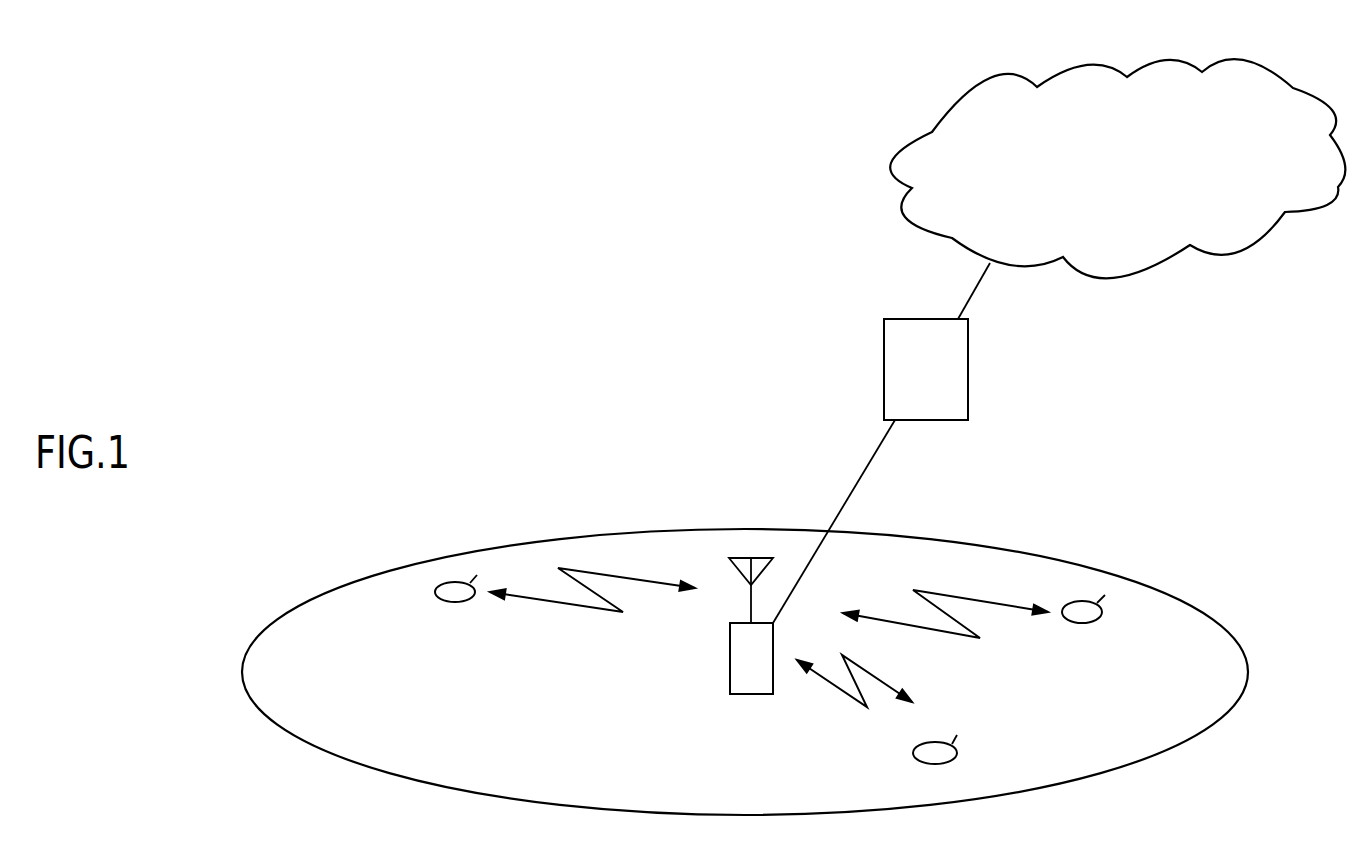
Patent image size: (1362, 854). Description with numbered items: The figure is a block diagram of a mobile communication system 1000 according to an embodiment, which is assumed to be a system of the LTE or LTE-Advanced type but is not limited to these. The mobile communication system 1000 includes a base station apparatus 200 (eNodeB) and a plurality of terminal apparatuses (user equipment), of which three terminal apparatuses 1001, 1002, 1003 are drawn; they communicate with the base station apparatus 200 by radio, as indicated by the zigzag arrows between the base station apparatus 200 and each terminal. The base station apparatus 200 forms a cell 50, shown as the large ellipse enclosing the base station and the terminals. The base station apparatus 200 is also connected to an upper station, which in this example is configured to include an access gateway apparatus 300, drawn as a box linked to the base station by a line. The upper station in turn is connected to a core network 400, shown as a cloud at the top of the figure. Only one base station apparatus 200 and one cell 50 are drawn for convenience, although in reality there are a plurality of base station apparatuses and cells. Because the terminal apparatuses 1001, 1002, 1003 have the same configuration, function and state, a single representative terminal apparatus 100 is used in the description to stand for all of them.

The mobile communication system 1000 is at (438, 104).
The cell 50 is at (1037, 790).
The terminal apparatus 100 is at (805, 677).
The terminal apparatus 1001 is at (460, 602).
The terminal apparatus 1002 is at (913, 753).
The terminal apparatus 1003 is at (1080, 623).
The base station apparatus 200 is at (730, 661).
The access gateway apparatus 300 is at (968, 367).
The core network 400 is at (1167, 60).